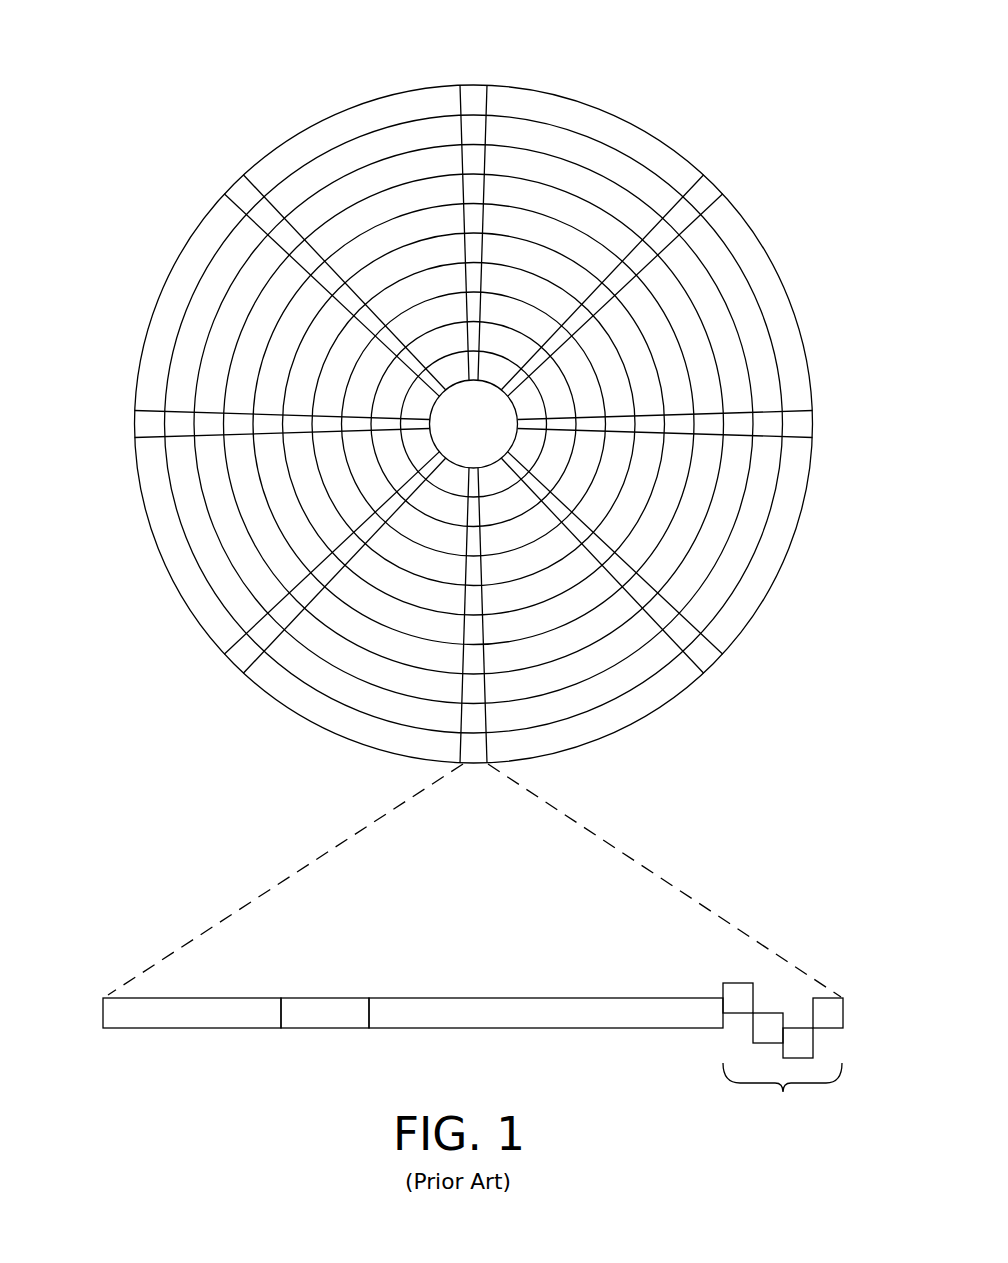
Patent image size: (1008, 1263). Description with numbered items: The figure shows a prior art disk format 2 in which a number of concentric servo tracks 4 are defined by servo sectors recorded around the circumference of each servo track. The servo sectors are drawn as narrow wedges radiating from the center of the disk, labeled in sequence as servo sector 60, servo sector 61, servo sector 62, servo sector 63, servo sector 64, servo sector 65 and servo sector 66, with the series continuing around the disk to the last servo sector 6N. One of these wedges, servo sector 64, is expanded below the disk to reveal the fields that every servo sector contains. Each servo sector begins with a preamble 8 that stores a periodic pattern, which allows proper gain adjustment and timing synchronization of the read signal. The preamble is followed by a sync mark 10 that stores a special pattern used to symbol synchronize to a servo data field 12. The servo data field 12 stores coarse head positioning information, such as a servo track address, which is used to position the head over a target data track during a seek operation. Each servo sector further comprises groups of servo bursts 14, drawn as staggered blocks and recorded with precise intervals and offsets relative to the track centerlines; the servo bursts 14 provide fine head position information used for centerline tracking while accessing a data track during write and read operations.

The disk format 2 is at (474, 512).
The servo tracks 4 is at (612, 135).
The servo sector 60 is at (476, 96).
The servo sector 61 is at (705, 191).
The servo sector 62 is at (804, 425).
The servo sector 63 is at (712, 663).
The servo sector 64 is at (321, 838).
The servo sector 65 is at (237, 664).
The servo sector 66 is at (140, 423).
The servo sector 6N is at (305, 263).
The preamble 8 is at (172, 1028).
The sync mark 10 is at (322, 1028).
The servo data field 12 is at (533, 1028).
The servo bursts 14 is at (479, 1020).